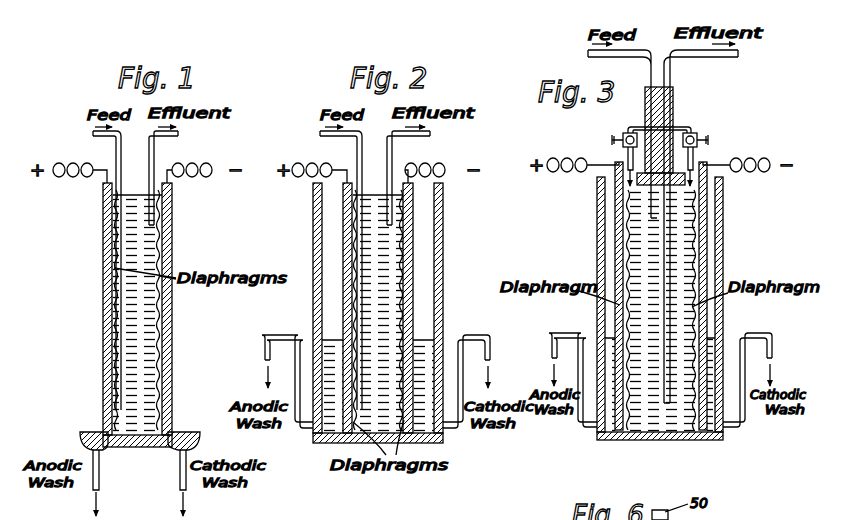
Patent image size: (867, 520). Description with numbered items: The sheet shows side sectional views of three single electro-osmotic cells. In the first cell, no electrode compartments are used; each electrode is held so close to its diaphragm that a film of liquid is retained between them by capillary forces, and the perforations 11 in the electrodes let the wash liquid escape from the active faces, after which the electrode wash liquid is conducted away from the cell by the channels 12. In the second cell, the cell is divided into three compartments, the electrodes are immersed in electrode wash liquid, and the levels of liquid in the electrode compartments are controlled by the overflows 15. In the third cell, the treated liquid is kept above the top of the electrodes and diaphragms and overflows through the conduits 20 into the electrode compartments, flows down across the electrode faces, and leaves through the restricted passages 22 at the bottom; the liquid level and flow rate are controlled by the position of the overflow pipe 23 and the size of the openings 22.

In FIG. 1, the perforations 11 is at (108, 330).
In FIG. 1, the channels 12 is at (85, 433).
In FIG. 2, the overflows 15 is at (284, 335).
In FIG. 3, the conduits 20 is at (633, 127).
In FIG. 3, the restricted passages 22 is at (700, 430).
In FIG. 3, the overflow pipe 23 is at (570, 333).